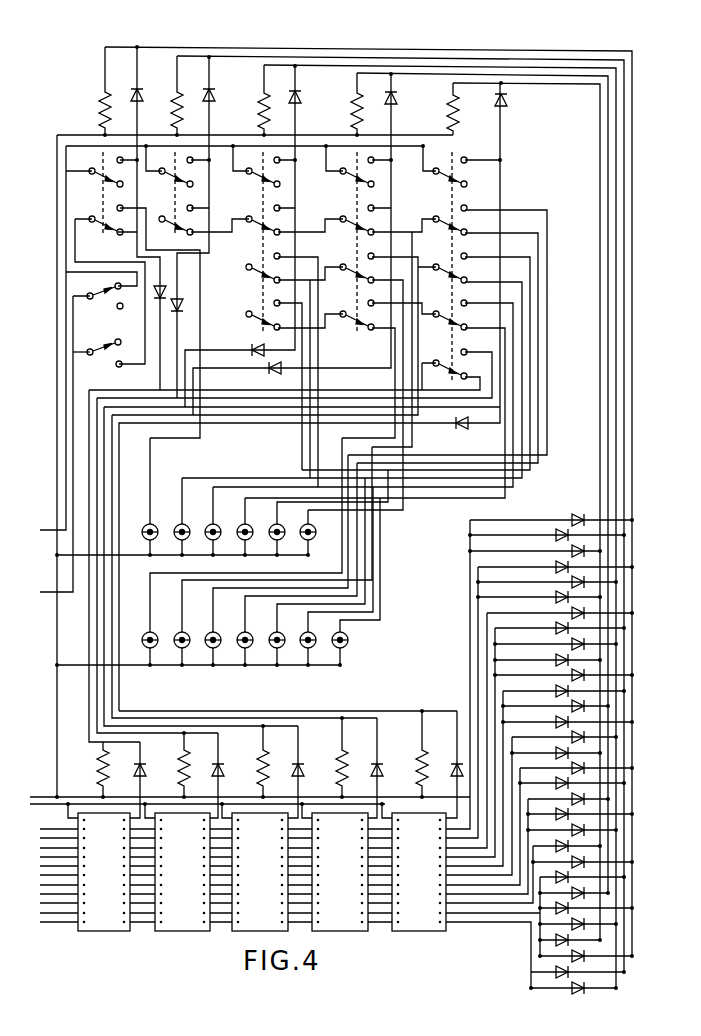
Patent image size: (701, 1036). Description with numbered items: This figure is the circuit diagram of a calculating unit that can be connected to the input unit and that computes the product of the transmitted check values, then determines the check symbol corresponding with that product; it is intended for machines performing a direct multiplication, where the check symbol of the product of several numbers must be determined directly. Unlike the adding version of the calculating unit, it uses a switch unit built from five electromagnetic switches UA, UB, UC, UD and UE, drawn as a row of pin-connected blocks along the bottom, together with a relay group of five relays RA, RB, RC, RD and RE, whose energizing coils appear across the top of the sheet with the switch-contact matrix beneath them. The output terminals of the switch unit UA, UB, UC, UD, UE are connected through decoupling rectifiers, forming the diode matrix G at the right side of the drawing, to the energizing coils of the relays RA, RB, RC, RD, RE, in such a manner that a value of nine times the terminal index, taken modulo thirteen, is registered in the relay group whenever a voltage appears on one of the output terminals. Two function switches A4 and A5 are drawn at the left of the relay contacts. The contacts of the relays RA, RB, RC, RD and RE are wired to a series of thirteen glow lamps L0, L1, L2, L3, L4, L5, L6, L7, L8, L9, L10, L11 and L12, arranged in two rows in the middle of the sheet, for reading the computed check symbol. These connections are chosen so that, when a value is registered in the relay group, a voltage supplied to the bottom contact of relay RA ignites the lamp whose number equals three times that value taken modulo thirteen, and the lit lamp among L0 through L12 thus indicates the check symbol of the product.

The relay RA is at (91, 91).
The relay RB is at (164, 95).
The relay RC is at (251, 100).
The relay RD is at (344, 104).
The relay RE is at (441, 109).
The function switch A4 is at (97, 361).
The function switch A5 is at (101, 298).
The glow lamp L0 is at (143, 496).
The glow lamp L1 is at (176, 516).
The glow lamp L2 is at (207, 521).
The glow lamp L3 is at (239, 526).
The glow lamp L4 is at (322, 512).
The glow lamp L5 is at (302, 532).
The glow lamp L6 is at (234, 551).
The glow lamp L7 is at (266, 556).
The glow lamp L8 is at (269, 560).
The glow lamp L9 is at (290, 564).
The glow lamp L10 is at (308, 571).
The glow lamp L11 is at (328, 576).
The glow lamp L12 is at (348, 581).
The electromagnetic switch UA is at (104, 872).
The electromagnetic switch UB is at (182, 872).
The electromagnetic switch UC is at (260, 872).
The electromagnetic switch UD is at (340, 872).
The electromagnetic switch UE is at (419, 872).
The diode matrix G is at (580, 513).